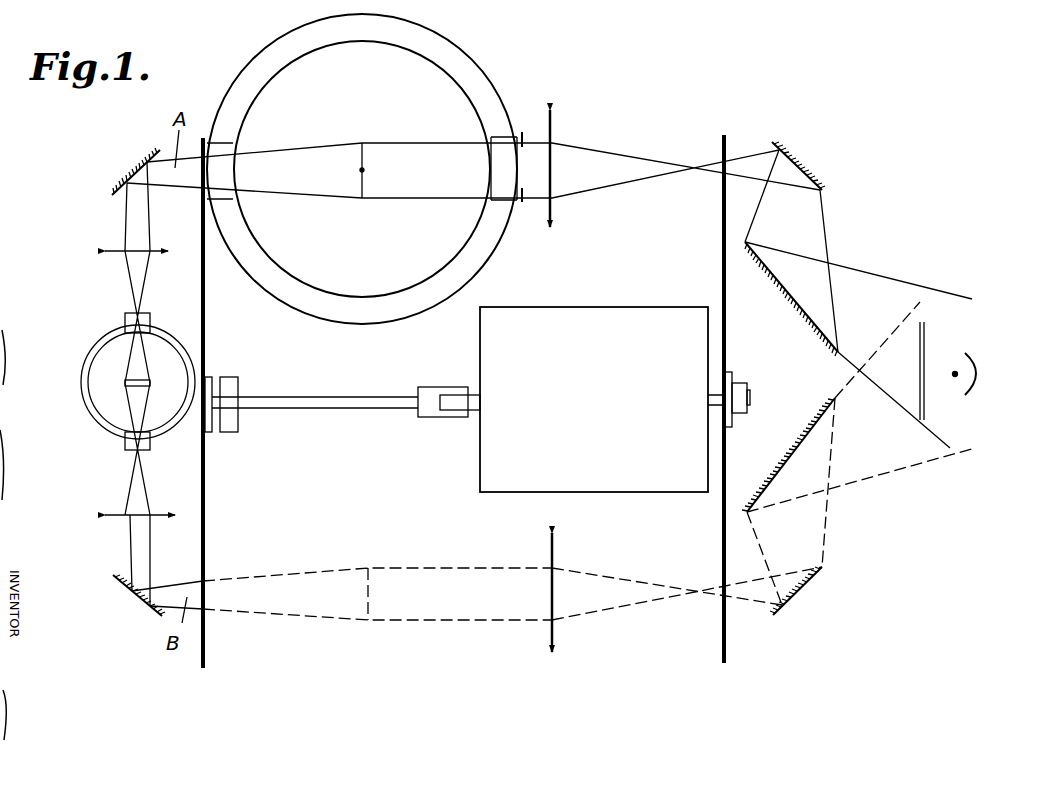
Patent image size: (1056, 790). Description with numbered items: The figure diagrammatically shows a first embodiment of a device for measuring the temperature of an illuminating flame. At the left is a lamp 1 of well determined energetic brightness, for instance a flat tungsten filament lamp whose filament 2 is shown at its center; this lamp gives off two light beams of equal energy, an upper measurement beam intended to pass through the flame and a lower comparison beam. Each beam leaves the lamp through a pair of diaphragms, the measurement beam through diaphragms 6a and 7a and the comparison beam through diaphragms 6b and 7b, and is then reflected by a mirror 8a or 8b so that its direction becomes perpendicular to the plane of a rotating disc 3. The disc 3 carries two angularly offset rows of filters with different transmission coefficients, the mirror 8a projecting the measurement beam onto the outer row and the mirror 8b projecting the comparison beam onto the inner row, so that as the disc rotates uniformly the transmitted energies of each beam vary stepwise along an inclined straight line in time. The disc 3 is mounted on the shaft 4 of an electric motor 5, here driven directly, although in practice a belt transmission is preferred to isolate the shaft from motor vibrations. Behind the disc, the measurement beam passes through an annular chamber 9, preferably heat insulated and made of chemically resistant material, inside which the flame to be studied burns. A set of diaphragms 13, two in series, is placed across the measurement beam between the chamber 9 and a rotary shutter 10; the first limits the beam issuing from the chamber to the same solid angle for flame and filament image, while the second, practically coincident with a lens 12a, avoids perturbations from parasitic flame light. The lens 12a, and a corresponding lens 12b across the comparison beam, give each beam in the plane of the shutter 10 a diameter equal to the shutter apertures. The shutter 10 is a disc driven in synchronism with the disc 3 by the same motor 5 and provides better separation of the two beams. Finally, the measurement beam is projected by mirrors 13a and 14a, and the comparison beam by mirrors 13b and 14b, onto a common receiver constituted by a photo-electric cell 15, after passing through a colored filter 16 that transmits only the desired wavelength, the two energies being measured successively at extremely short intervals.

The lamp 1 is at (90, 357).
The filament 2 is at (125, 385).
The rotating disc 3 is at (205, 316).
The shaft 4 is at (372, 403).
The electric motor 5 is at (502, 443).
The diaphragm 6a is at (138, 316).
The diaphragm 6b is at (138, 451).
The diaphragm 7a is at (118, 253).
The diaphragm 7b is at (123, 518).
The mirror 8a is at (140, 170).
The mirror 8b is at (133, 593).
The annular chamber 9 is at (500, 232).
The rotary shutter 10 is at (720, 210).
The lens 12a is at (553, 135).
The lens 12b is at (553, 552).
The set of diaphragms 13 is at (548, 135).
The mirror 13a is at (797, 163).
The mirror 13b is at (800, 593).
The mirror 14a is at (792, 298).
The mirror 14b is at (792, 452).
The photo-electric cell 15 is at (977, 380).
The colored filter 16 is at (920, 417).